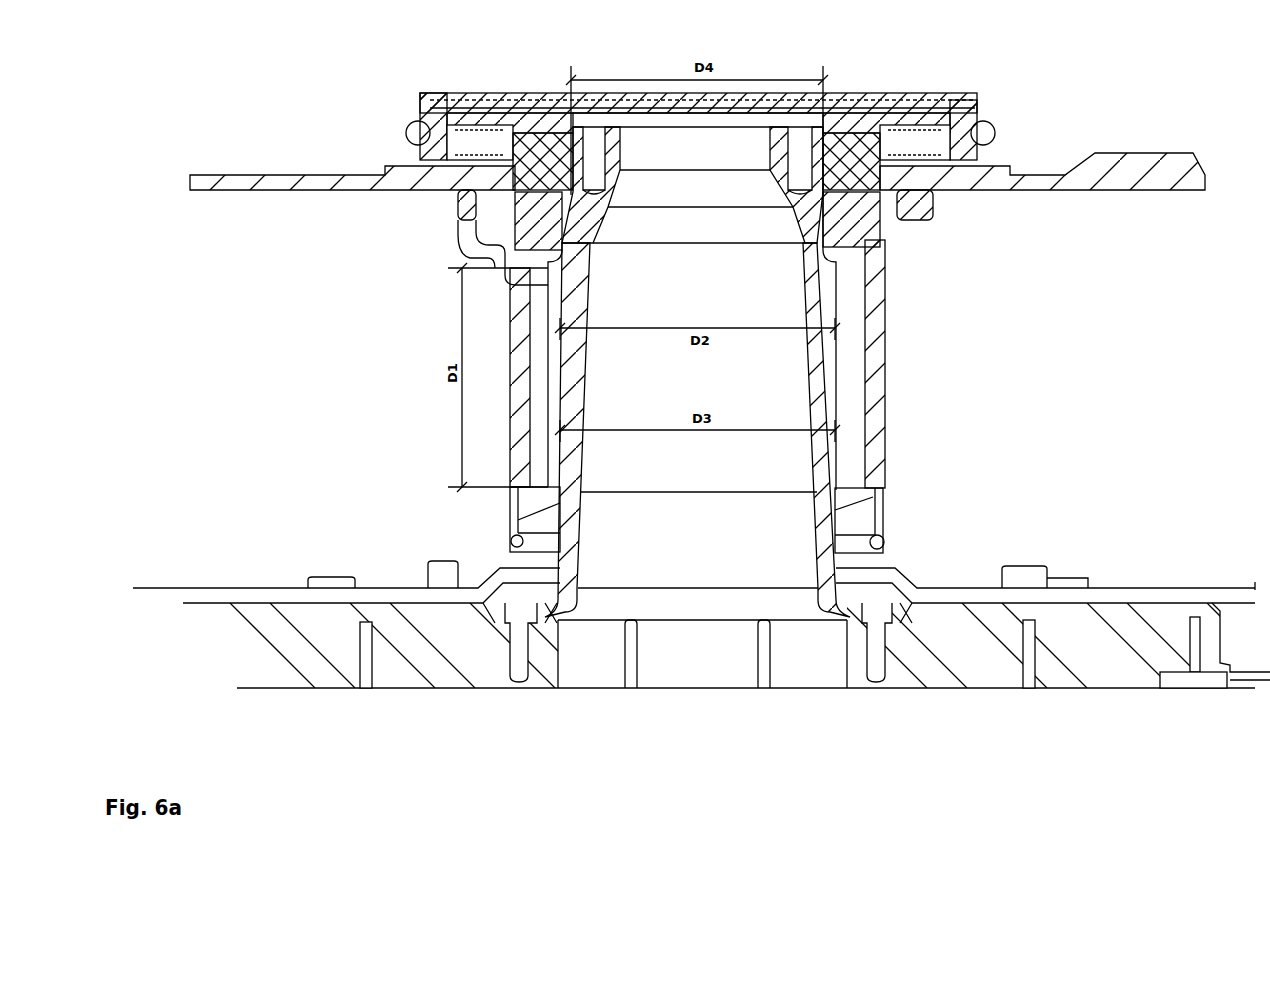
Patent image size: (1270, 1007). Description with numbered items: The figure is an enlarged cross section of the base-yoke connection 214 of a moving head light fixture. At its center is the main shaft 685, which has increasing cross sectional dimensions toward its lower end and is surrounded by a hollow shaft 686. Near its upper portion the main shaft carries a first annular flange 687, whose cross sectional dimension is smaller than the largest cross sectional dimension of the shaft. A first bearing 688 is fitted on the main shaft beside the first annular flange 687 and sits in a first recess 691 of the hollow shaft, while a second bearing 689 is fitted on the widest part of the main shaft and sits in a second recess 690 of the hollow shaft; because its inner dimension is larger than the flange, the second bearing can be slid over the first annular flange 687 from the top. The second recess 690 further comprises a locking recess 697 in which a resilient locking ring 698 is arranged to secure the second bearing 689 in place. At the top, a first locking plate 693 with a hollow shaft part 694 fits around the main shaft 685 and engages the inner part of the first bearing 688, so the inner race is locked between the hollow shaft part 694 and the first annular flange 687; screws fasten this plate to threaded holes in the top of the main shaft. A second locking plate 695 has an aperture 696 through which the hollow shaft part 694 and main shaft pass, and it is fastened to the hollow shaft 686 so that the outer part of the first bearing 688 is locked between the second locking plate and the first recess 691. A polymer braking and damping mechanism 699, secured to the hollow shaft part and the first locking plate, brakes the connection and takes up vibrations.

The base-yoke connection 214 is at (272, 148).
The main shaft 685 is at (848, 405).
The hollow shaft 686 is at (900, 437).
The first annular flange 687 is at (830, 258).
The first bearing 688 is at (849, 228).
The second bearing 689 is at (862, 507).
The second recess 690 is at (876, 522).
The first recess 691 is at (847, 226).
The first locking plate 693 is at (933, 113).
The hollow shaft part 694 is at (828, 160).
The second locking plate 695 is at (1062, 176).
The aperture 696 is at (807, 160).
The locking recess 697 is at (884, 543).
The resilient locking ring 698 is at (518, 540).
The braking and damping mechanism 699 is at (543, 172).